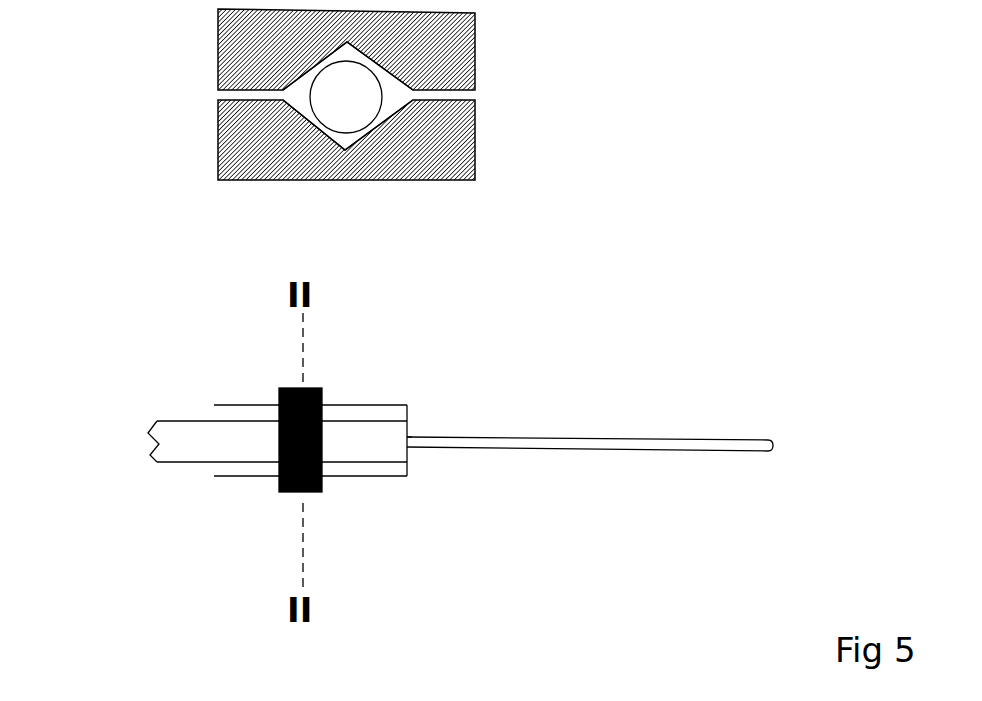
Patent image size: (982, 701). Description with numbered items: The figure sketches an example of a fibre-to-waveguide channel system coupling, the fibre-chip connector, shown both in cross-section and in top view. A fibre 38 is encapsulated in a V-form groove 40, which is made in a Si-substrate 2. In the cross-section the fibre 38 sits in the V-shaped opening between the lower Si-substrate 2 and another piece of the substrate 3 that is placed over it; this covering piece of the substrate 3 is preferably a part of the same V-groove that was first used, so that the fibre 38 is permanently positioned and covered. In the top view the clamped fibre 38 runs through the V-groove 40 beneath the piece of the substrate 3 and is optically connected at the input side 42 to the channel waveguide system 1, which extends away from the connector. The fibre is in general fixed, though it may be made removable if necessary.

The channel waveguide system 1 is at (603, 452).
The Si-substrate 2 is at (238, 158).
The piece of the substrate 3 is at (235, 52).
The fibre 38 is at (363, 108).
The V-form groove 40 is at (392, 108).
The input side 42 is at (408, 435).